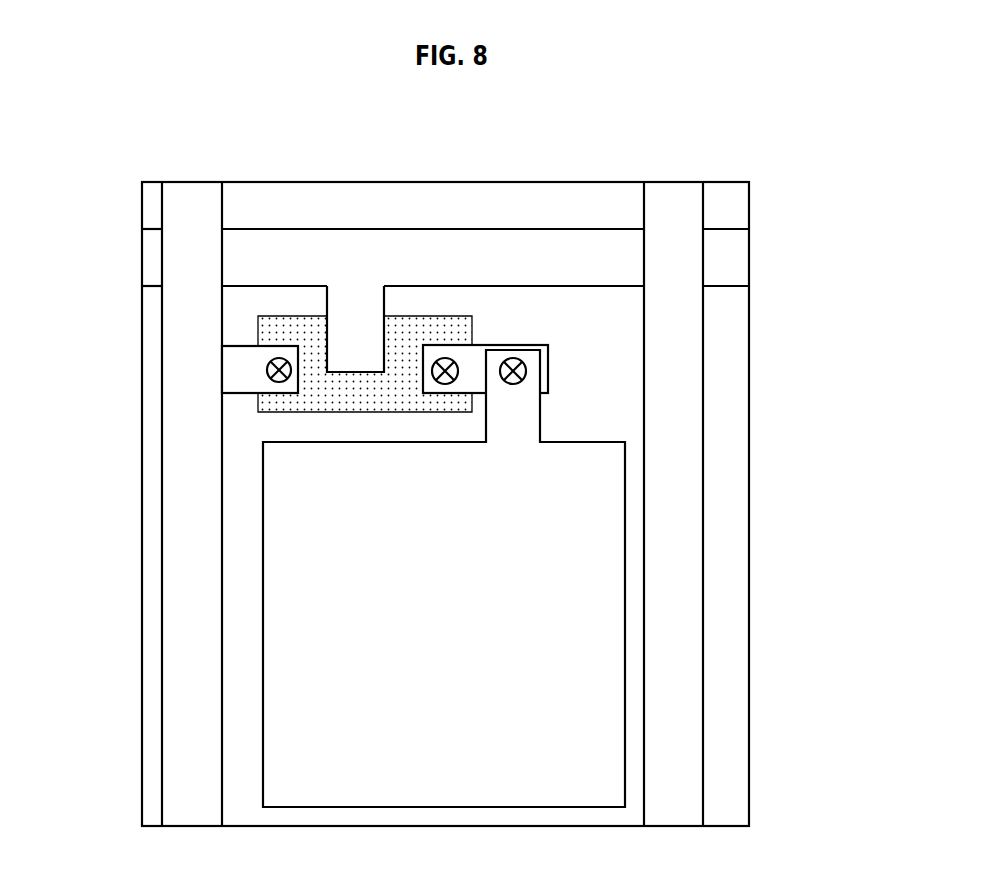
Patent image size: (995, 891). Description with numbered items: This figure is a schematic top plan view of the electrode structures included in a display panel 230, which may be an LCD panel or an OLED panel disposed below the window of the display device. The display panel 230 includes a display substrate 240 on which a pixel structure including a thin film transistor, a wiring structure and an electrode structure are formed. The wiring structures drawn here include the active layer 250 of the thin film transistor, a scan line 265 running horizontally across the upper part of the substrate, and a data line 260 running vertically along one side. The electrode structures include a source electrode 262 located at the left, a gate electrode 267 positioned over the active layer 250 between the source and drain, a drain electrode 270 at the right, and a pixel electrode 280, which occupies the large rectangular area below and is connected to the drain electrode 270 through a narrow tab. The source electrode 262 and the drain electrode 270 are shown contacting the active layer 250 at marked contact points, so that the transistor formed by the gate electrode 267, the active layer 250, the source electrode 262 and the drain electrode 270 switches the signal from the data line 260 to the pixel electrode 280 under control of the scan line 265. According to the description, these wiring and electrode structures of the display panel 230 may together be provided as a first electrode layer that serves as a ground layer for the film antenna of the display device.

The display panel 230 is at (262, 116).
The display substrate 240 is at (733, 675).
The active layer 250 is at (295, 330).
The data line 260 is at (167, 555).
The source electrode 262 is at (243, 383).
The scan line 265 is at (570, 243).
The gate electrode 267 is at (376, 327).
The drain electrode 270 is at (470, 363).
The pixel electrode 280 is at (592, 518).